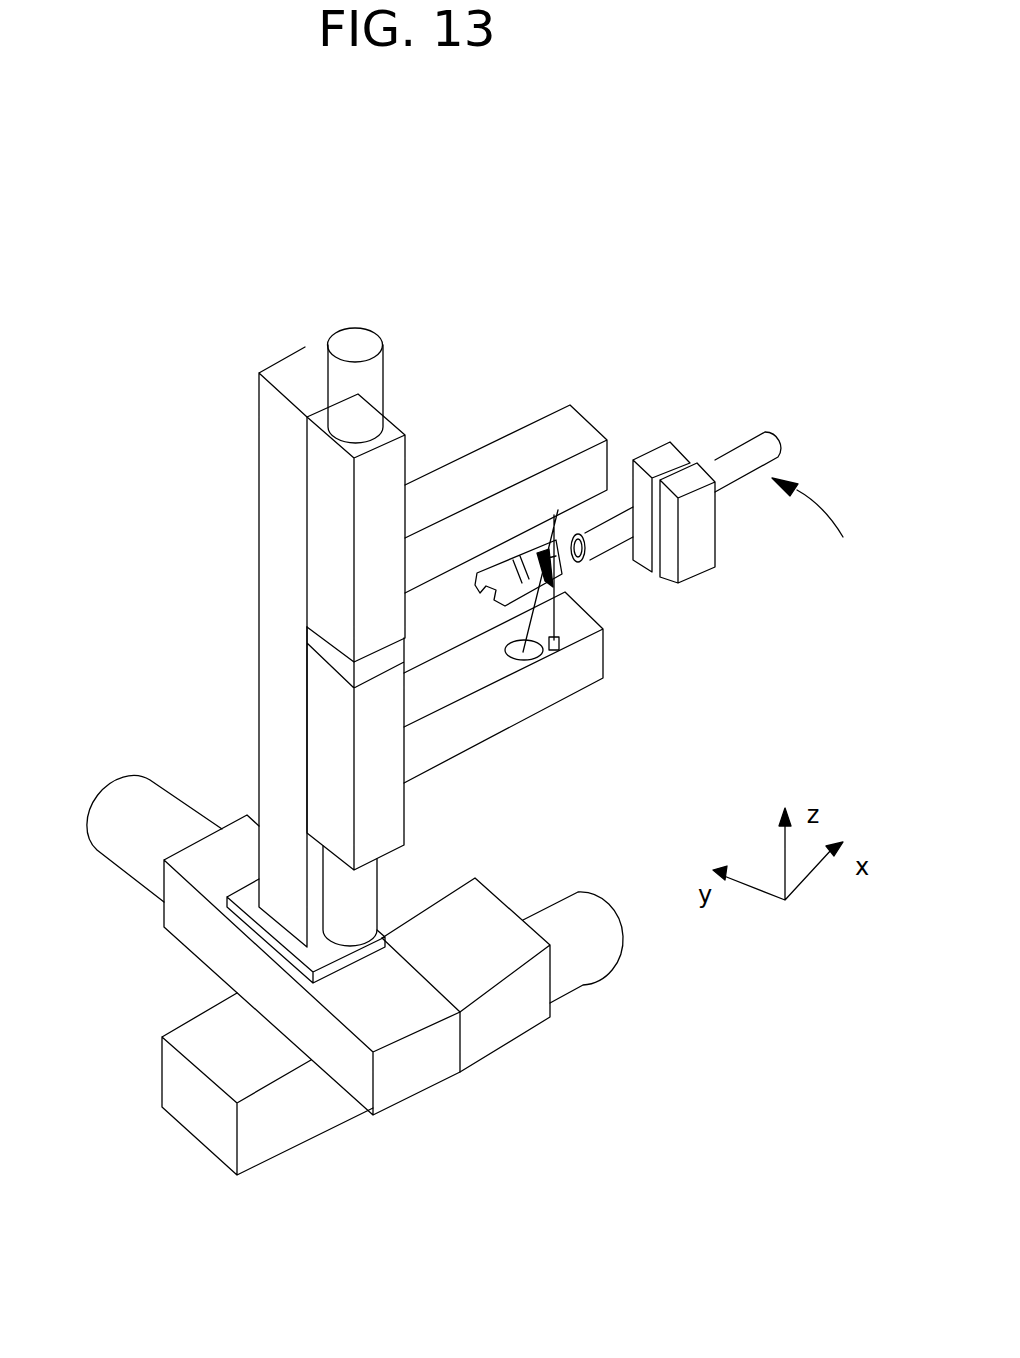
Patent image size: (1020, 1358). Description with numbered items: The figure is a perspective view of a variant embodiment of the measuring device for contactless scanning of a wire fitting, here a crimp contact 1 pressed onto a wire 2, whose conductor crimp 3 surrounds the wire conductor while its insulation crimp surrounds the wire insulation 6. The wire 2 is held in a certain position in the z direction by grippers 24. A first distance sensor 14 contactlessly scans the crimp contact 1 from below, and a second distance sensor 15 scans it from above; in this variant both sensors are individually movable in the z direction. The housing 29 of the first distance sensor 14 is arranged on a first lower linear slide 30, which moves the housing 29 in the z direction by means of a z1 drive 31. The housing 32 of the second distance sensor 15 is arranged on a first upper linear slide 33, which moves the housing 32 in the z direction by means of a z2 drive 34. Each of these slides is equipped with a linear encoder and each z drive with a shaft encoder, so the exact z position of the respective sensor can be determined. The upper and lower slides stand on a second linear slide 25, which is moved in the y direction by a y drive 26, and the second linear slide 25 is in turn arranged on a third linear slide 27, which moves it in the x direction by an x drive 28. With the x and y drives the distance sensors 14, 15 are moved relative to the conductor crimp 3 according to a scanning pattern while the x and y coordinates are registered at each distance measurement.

The crimp contact 1 is at (490, 638).
The wire 2 is at (816, 522).
The conductor crimp 3 is at (567, 563).
The wire insulation 6 is at (630, 508).
The first distance sensor 14 is at (572, 620).
The second distance sensor 15 is at (533, 538).
The grippers 24 is at (667, 458).
The second linear slide 25 is at (208, 935).
The y drive 26 is at (128, 805).
The third linear slide 27 is at (288, 1133).
The x drive 28 is at (583, 955).
The housing of the first distance sensor 29 is at (535, 692).
The first lower linear slide 30 is at (377, 797).
The z1 drive 31 is at (365, 885).
The housing of the second distance sensor 32 is at (534, 456).
The first upper linear slide 33 is at (337, 513).
The z2 drive 34 is at (359, 347).